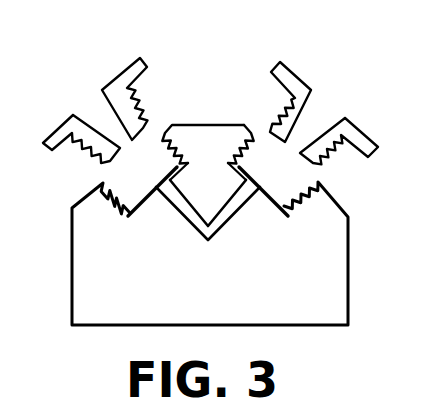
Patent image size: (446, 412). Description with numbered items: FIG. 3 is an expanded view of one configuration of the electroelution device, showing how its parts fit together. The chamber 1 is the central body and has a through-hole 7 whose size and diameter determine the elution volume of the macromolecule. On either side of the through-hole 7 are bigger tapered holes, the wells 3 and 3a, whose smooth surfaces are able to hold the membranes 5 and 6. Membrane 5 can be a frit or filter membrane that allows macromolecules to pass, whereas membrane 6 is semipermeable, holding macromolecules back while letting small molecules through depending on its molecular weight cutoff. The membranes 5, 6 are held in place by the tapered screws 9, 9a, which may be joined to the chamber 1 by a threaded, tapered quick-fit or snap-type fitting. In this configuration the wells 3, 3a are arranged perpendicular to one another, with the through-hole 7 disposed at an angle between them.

The chamber 1 is at (308, 328).
The well 3 is at (178, 158).
The well 3a is at (238, 167).
The membrane 5 is at (148, 194).
The membrane 6 is at (283, 189).
The through-hole 7 is at (217, 236).
The tapered screw 9 is at (143, 58).
The tapered screw 9a is at (270, 68).